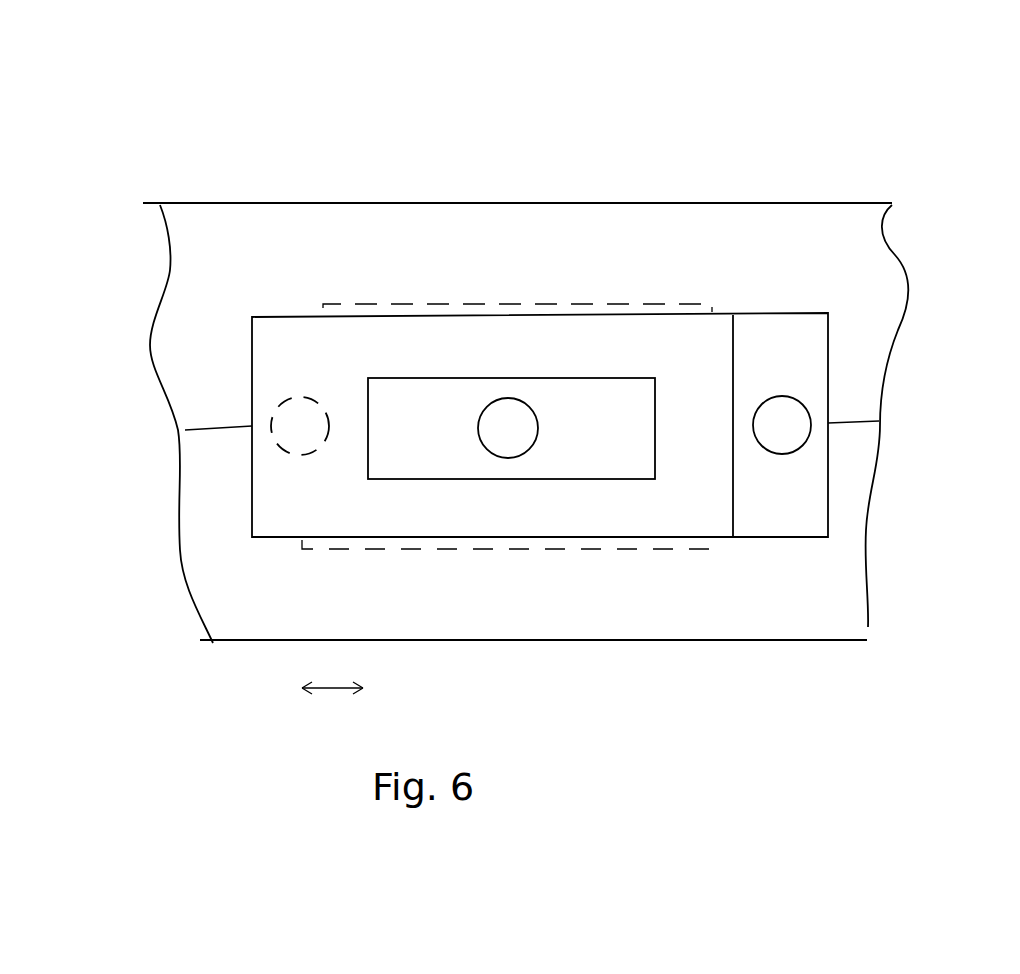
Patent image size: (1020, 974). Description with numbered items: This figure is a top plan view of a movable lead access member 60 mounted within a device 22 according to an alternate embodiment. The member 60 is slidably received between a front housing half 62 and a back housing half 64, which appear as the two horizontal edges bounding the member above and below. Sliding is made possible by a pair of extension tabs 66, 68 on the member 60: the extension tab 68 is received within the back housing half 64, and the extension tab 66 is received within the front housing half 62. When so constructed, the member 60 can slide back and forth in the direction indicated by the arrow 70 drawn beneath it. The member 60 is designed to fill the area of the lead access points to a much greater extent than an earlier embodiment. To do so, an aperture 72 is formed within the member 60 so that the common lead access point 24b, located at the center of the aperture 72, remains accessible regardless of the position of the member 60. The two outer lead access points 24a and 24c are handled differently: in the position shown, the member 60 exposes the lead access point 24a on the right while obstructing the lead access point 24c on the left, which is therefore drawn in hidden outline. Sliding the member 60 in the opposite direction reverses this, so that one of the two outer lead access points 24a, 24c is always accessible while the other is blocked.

The device 22 is at (713, 203).
The lead access point 24a is at (786, 457).
The common lead access point 24b is at (538, 425).
The lead access point 24c is at (275, 445).
The movable lead access member 60 is at (283, 316).
The front housing half 62 is at (612, 643).
The back housing half 64 is at (583, 203).
The extension tab 66 is at (492, 550).
The extension tab 68 is at (497, 300).
The arrow 70 is at (333, 686).
The aperture 72 is at (385, 483).